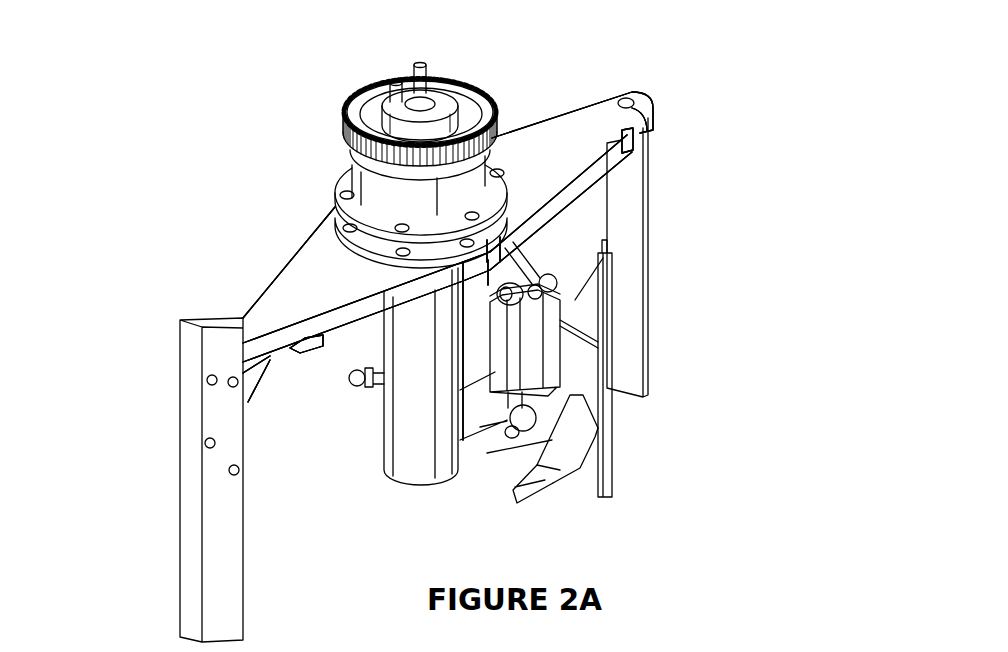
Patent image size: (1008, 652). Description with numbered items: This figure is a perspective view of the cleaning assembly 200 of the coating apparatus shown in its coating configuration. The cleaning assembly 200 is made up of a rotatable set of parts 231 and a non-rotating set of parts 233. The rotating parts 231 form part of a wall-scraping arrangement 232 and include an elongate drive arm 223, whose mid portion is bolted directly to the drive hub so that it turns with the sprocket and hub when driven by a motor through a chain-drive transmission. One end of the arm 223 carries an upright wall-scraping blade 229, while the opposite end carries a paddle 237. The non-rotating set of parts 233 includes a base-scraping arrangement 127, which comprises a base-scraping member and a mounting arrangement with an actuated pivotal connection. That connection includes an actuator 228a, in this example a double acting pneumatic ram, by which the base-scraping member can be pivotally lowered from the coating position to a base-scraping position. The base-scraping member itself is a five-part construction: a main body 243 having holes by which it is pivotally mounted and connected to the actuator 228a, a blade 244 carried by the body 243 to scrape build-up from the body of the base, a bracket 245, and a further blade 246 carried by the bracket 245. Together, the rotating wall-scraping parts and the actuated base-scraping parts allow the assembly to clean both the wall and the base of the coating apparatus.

The cleaning assembly 200 is at (236, 156).
The rotatable set of parts 231 is at (567, 108).
The elongate drive arm 223 is at (448, 266).
The wall-scraping arrangement 232 is at (448, 266).
The paddle 237 is at (632, 202).
The base-scraping arrangement 127 is at (583, 317).
The actuator 228a is at (547, 360).
The wall-scraping blade 229 is at (218, 518).
The non-rotating set of parts 233 is at (397, 478).
The bracket 245 is at (547, 460).
The blade 246 is at (530, 495).
The blade 244 is at (610, 497).
The main body 243 is at (580, 473).